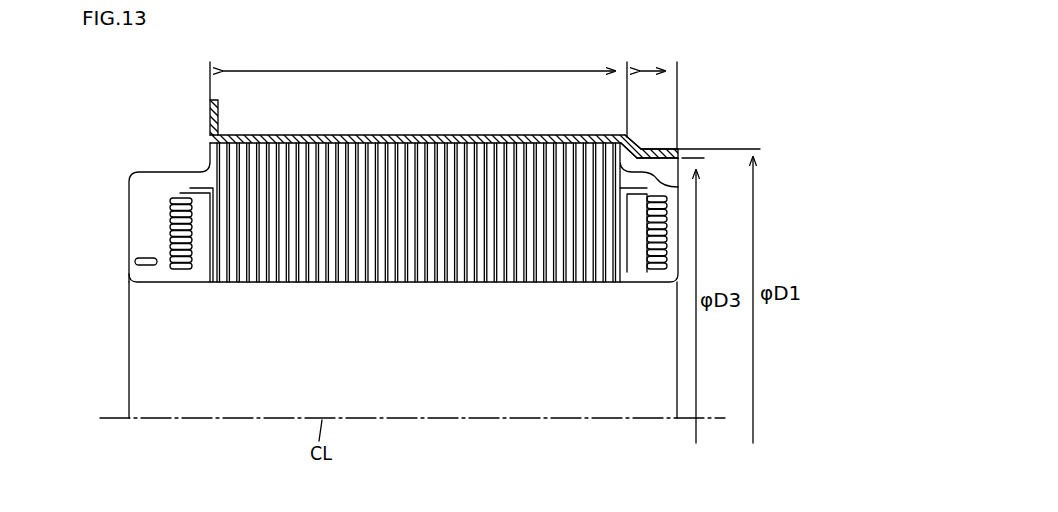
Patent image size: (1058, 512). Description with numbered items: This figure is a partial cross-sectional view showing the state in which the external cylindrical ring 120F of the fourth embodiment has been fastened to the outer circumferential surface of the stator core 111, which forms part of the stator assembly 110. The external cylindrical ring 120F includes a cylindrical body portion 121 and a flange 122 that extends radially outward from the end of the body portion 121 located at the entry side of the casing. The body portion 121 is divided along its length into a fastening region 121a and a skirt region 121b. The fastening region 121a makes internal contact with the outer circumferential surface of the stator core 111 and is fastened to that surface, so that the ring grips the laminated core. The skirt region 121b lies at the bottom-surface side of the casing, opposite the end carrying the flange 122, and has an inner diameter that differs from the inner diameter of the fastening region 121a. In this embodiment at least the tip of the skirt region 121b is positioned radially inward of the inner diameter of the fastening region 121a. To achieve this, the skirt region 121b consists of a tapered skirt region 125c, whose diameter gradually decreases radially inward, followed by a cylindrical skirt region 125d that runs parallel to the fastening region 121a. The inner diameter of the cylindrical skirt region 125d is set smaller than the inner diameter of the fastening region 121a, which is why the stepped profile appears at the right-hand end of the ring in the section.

The stator 110 is at (141, 150).
The stator core 111 is at (395, 268).
The external cylindrical ring 120F is at (697, 80).
The body portion 121 is at (383, 134).
The fastening region 121a is at (418, 92).
The skirt region 121b is at (655, 98).
The flange 122 is at (208, 124).
The tapered skirt region 125c is at (637, 143).
The cylindrical skirt region 125d is at (663, 152).